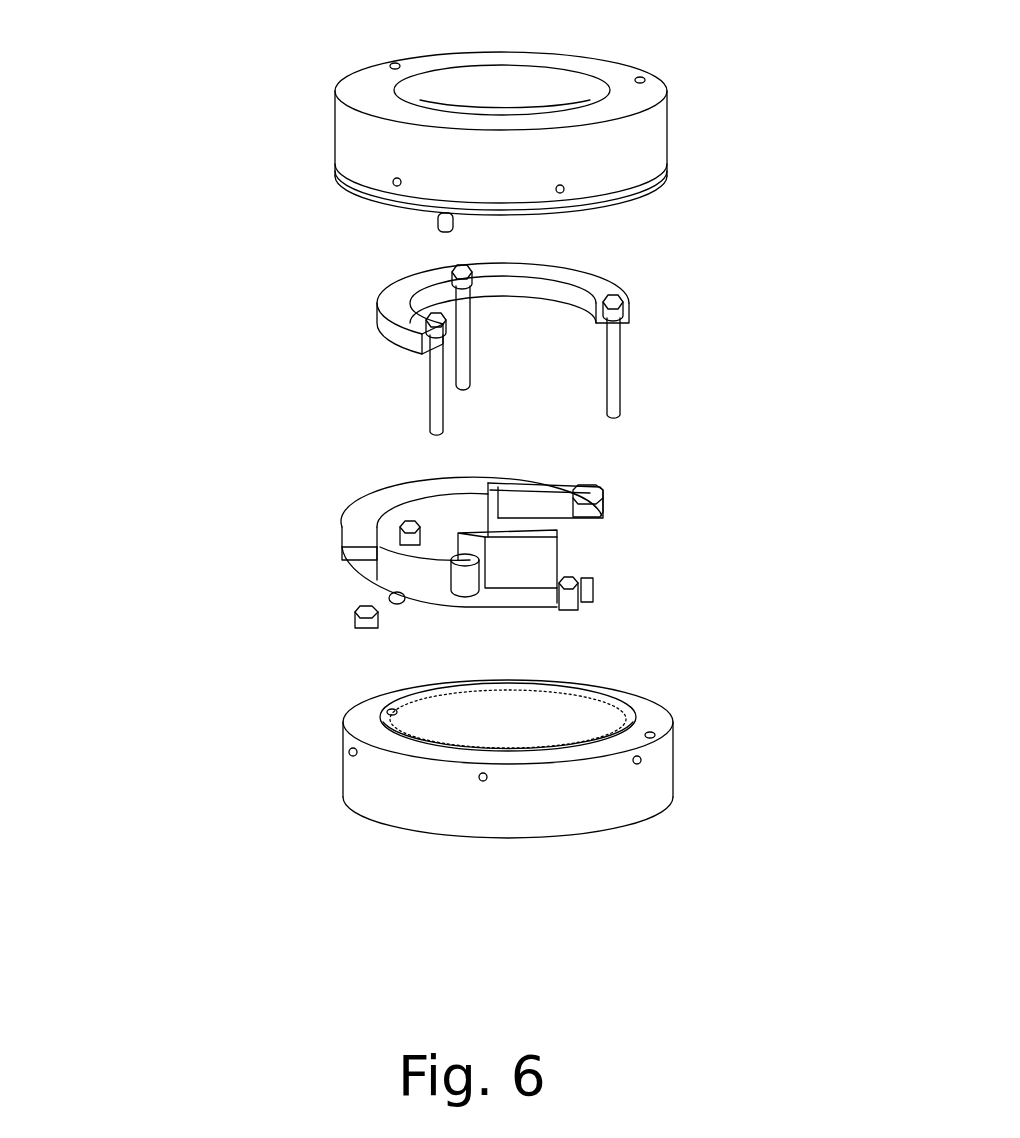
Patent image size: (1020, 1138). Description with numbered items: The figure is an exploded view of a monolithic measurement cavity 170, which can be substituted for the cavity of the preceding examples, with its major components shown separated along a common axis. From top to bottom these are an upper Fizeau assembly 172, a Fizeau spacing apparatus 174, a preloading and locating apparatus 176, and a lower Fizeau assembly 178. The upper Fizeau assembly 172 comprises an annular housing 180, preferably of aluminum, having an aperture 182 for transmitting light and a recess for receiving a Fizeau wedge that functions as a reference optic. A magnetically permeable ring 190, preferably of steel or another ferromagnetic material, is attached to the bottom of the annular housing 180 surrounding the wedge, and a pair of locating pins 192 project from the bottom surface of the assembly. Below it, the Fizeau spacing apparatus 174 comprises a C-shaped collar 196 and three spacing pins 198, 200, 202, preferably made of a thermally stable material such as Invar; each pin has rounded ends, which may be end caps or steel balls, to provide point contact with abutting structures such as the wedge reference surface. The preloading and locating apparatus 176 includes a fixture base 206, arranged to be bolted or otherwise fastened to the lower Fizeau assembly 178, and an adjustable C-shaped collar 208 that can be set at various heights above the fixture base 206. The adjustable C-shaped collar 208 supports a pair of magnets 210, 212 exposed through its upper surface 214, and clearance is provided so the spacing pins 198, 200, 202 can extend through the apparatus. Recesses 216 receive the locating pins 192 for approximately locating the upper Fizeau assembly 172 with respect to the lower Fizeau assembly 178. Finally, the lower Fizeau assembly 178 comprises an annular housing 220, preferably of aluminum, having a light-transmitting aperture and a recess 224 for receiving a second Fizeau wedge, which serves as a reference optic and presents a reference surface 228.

The monolithic measurement cavity 170 is at (237, 72).
The upper Fizeau assembly 172 is at (334, 140).
The Fizeau spacing apparatus 174 is at (370, 321).
The preloading and locating apparatus 176 is at (340, 532).
The lower Fizeau assembly 178 is at (340, 768).
The annular housing 180 is at (672, 121).
The aperture 182 is at (570, 87).
The magnetically permeable ring 190 is at (635, 187).
The locating pins 192 is at (438, 223).
The C-shaped collar 196 is at (628, 312).
The spacing pin 198 is at (428, 393).
The spacing pin 200 is at (462, 357).
The spacing pin 202 is at (617, 370).
The fixture base 206 is at (590, 603).
The adjustable C-shaped collar 208 is at (350, 548).
The magnet 210 is at (422, 552).
The magnet 212 is at (580, 486).
The upper surface 214 is at (370, 512).
The recesses 216 is at (565, 489).
The annular housing 220 is at (672, 755).
The recess 224 is at (380, 722).
The reference surface 228 is at (597, 713).